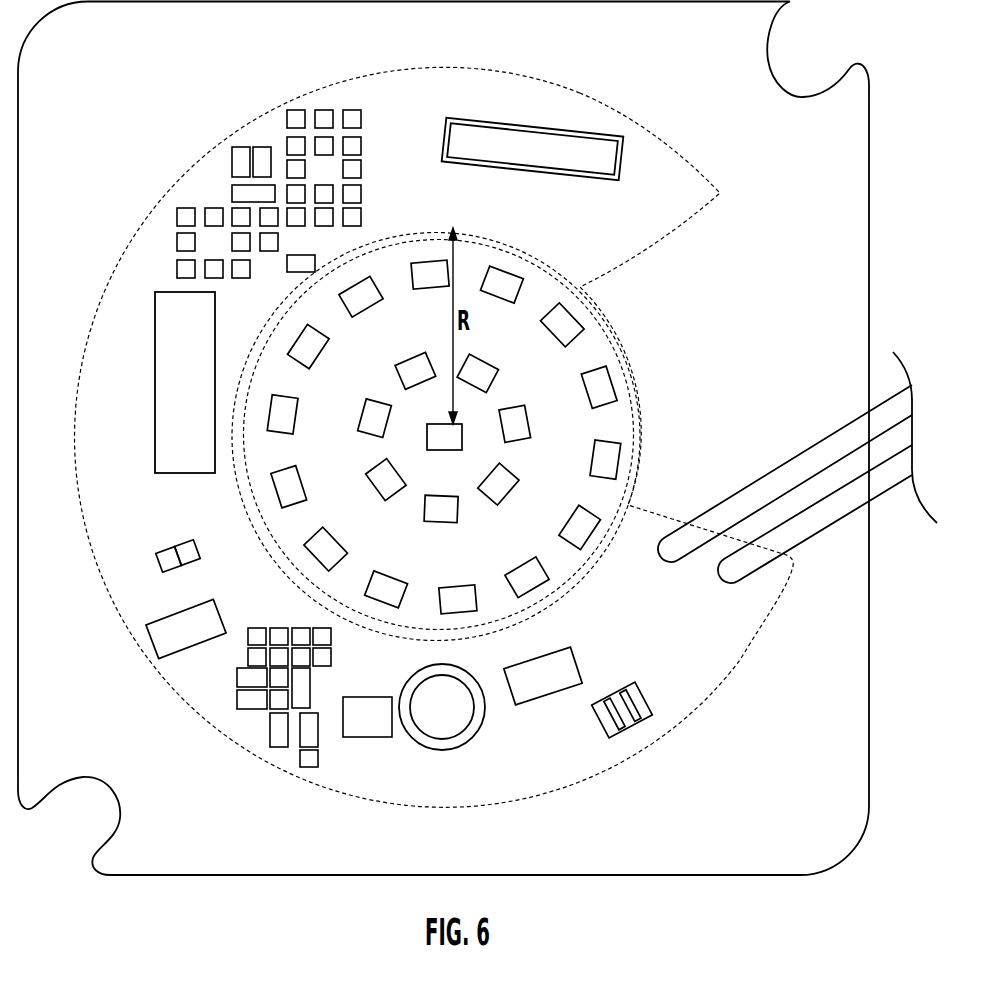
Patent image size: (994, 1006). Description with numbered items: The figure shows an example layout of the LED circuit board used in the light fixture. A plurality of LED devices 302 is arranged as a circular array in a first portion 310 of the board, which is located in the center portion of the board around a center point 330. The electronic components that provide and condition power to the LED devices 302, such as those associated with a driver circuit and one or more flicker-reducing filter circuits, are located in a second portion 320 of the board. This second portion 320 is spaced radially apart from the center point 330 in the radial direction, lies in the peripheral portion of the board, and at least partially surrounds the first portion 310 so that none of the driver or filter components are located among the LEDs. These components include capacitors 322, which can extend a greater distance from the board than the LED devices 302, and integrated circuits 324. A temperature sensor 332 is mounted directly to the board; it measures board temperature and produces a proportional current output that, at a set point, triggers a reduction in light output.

The LED devices 302 is at (328, 348).
The first portion 310 is at (630, 438).
The second portion 320 is at (618, 257).
The capacitors 322 is at (549, 147).
The integrated circuits 324 is at (190, 622).
The center point 330 is at (462, 424).
The temperature sensor 332 is at (543, 668).